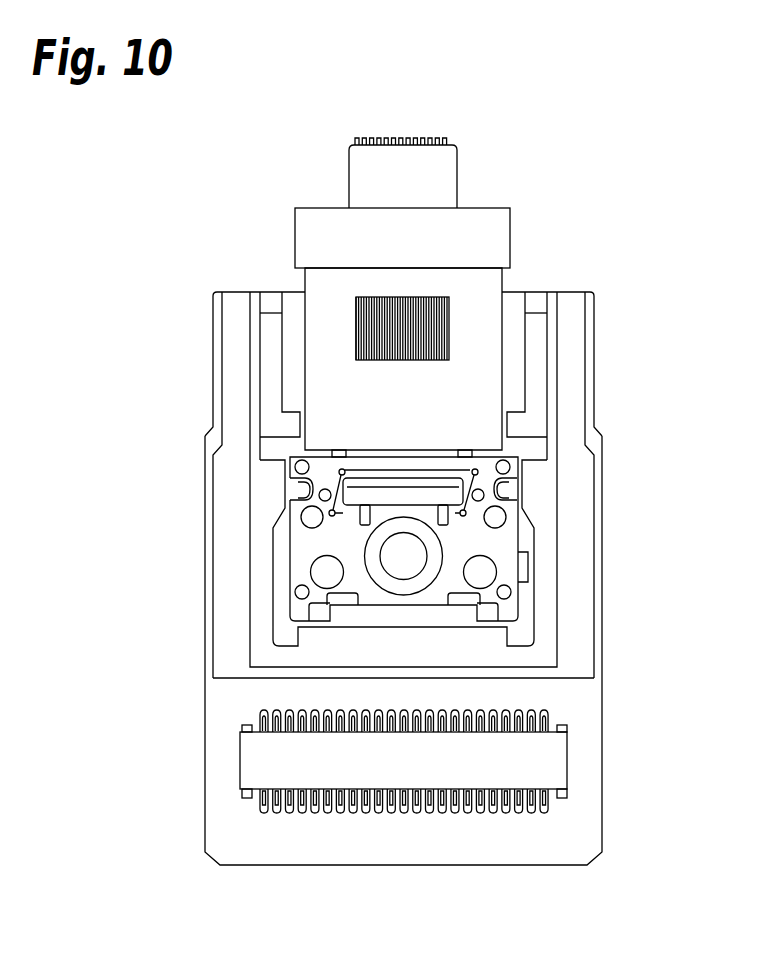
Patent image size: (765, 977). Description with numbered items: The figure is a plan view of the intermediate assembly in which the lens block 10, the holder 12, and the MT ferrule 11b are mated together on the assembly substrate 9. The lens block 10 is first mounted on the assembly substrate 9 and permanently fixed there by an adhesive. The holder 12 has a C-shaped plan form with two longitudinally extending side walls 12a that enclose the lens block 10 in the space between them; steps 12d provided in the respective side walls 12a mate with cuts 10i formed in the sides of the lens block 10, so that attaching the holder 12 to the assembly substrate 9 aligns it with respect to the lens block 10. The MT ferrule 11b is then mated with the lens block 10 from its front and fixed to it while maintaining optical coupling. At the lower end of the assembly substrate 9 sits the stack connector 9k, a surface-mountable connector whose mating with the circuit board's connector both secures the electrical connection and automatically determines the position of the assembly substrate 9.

The assembly substrate 9 is at (437, 850).
The stack connector 9k is at (555, 760).
The lens block 10 is at (500, 553).
The cuts 10i is at (297, 496).
The MT ferrule 11b is at (467, 277).
The holder 12 is at (577, 293).
The side walls 12a is at (227, 546).
The steps 12d is at (300, 488).